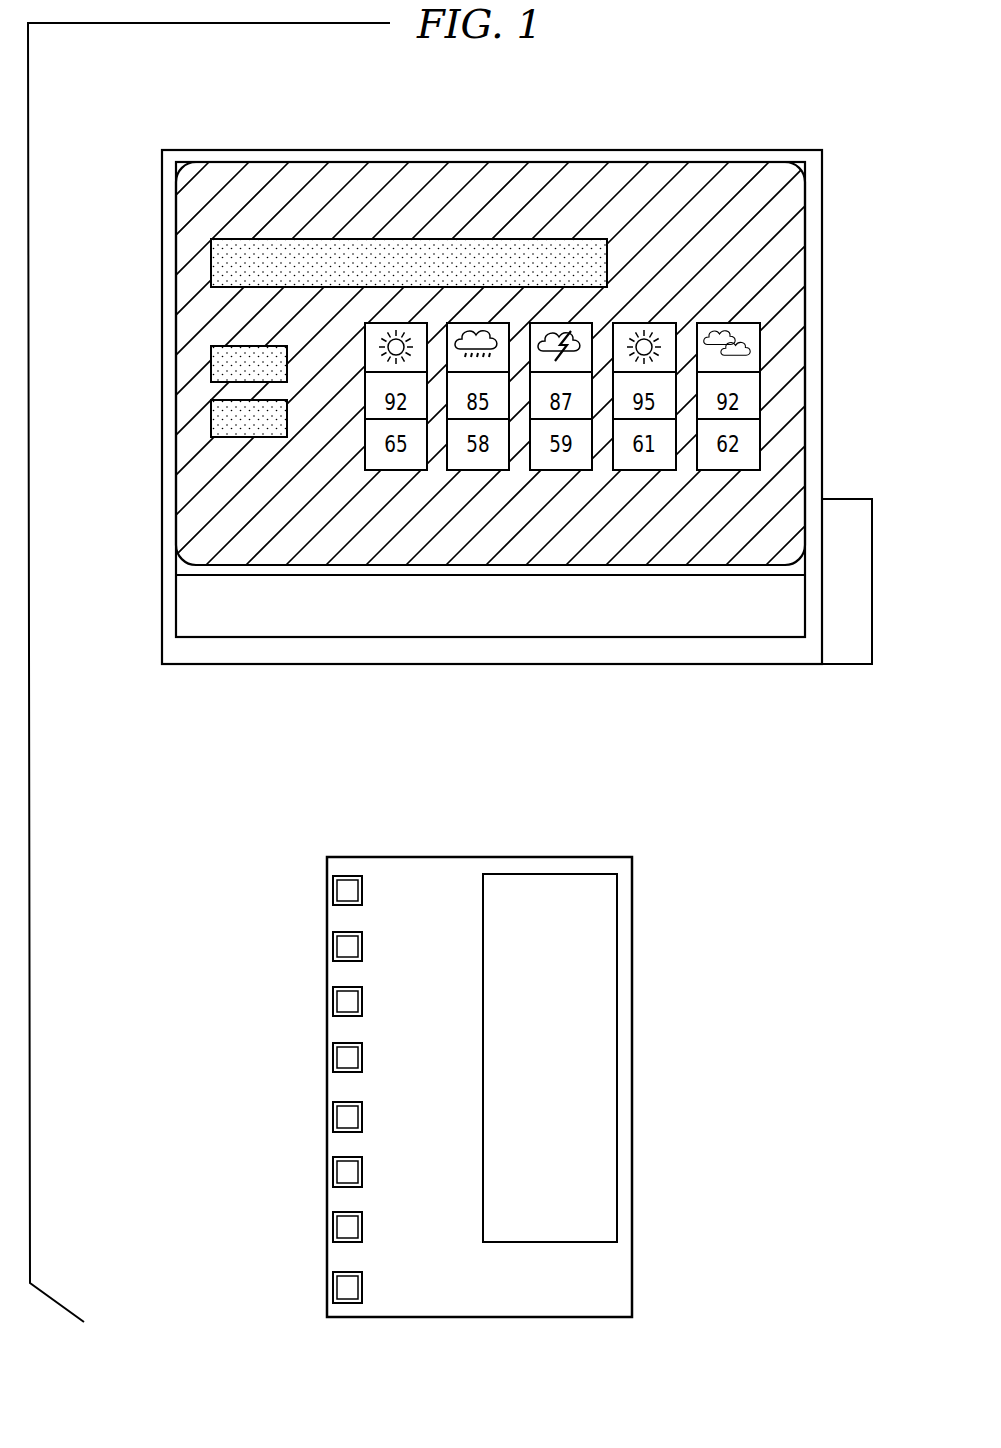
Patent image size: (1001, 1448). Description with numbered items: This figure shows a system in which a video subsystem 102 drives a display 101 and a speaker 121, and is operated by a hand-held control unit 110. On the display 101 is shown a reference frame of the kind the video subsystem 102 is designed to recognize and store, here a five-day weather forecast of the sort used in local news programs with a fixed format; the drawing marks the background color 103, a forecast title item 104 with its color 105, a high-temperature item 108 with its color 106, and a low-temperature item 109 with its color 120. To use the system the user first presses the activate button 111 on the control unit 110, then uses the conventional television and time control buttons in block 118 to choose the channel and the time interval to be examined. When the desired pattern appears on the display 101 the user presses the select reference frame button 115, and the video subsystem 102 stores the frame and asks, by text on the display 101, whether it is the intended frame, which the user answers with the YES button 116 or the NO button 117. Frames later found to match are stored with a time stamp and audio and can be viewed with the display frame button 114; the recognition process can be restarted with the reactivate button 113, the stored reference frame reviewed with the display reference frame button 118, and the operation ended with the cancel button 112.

The display 101 is at (711, 158).
The video subsystem 102 is at (655, 625).
The background color 103 is at (286, 192).
The five day forecast item 104 is at (211, 245).
The five day forecast item color 105 is at (211, 279).
The high item color 106 is at (211, 356).
The high item 108 is at (211, 376).
The low item 109 is at (211, 428).
The hand-held control unit 110 is at (632, 1157).
The activate button 111 is at (333, 890).
The cancel button 112 is at (333, 946).
The reactivate button 113 is at (333, 1002).
The display frame button 114 is at (333, 1058).
The select reference frame button 115 is at (333, 1117).
The YES button 116 is at (333, 1172).
The NO button 117 is at (333, 1227).
The conventional television control buttons block 118 is at (333, 1288).
The low item color 120 is at (211, 436).
The speaker 121 is at (840, 664).